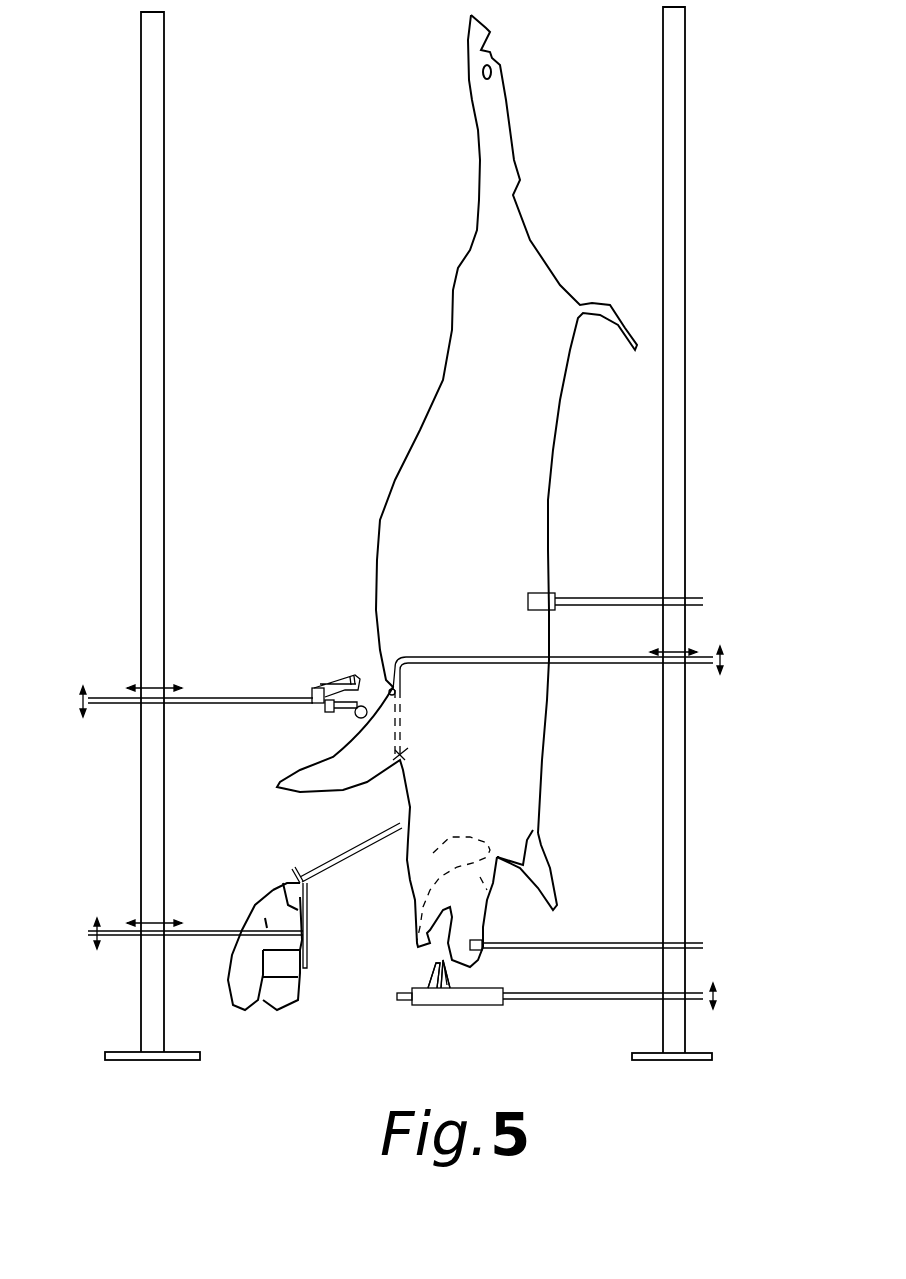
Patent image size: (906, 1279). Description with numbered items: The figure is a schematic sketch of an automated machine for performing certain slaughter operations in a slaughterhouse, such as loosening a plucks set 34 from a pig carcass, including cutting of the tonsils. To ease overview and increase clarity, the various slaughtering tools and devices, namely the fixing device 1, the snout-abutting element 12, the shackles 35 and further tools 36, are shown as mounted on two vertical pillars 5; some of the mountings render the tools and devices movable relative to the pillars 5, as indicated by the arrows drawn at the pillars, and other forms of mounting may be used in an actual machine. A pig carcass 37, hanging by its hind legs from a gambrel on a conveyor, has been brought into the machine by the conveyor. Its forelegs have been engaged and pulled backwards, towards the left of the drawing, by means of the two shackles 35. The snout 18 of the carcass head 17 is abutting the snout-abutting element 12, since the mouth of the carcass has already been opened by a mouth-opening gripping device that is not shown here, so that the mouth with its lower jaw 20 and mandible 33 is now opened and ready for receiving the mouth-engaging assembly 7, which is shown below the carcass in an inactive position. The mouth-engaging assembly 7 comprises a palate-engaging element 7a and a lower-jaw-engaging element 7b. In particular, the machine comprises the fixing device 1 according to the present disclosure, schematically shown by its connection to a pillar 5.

The fixing device 1 is at (466, 1022).
The pillar 5 is at (153, 482).
The mouth-engaging assembly 7 is at (398, 969).
The palate-engaging element 7a is at (455, 972).
The lower-jaw-engaging element 7b is at (437, 970).
The snout-abutting element 12 is at (482, 943).
The head of carcass 17 is at (484, 911).
The snout of carcass 18 is at (477, 960).
The lower jaw of carcass 20 is at (407, 883).
The mandible of carcass 33 is at (443, 862).
The plucks set of carcass 34 is at (254, 884).
The shackle 35 is at (590, 660).
The tools 36 is at (328, 652).
The carcass 37 is at (378, 430).